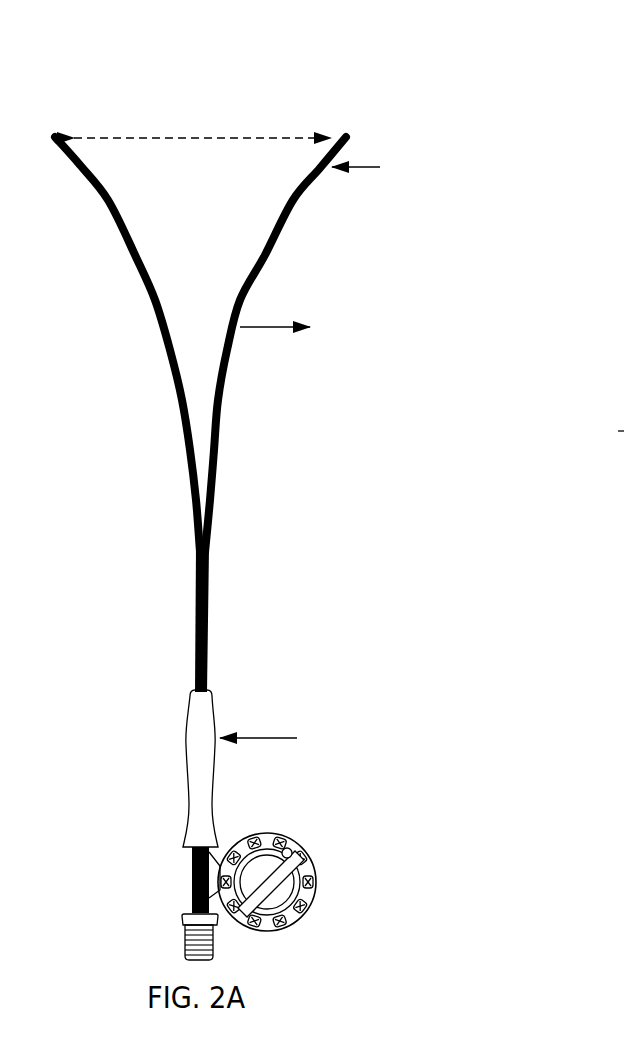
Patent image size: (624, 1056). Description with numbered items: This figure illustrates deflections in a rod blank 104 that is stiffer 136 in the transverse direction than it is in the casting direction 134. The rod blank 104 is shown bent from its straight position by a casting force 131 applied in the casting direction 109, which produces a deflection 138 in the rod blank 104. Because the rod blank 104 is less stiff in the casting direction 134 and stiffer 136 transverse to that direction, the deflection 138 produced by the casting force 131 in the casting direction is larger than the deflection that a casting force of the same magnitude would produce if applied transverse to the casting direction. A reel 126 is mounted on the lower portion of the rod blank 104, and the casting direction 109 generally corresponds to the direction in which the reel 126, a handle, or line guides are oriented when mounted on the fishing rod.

The rod blank 104 is at (227, 553).
The casting direction 109 is at (351, 366).
The reel 126 is at (330, 872).
The casting force 131 is at (345, 778).
The casting direction 134 is at (495, 215).
The stiffer in the transverse direction 136 is at (538, 500).
The deflection 138 is at (209, 138).